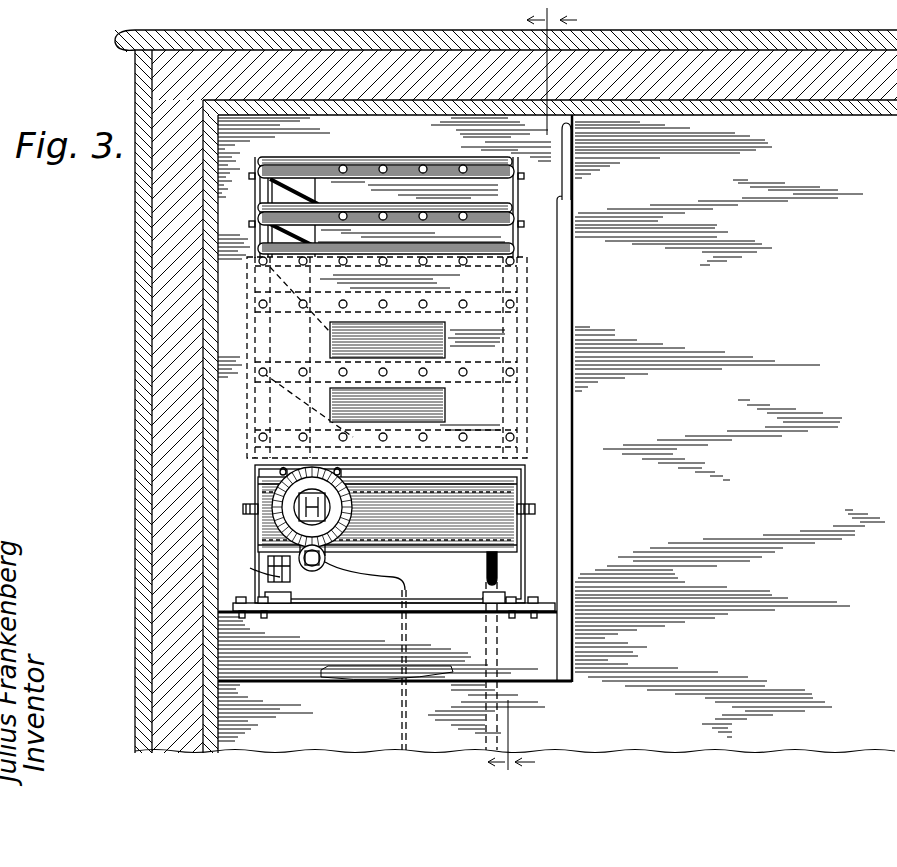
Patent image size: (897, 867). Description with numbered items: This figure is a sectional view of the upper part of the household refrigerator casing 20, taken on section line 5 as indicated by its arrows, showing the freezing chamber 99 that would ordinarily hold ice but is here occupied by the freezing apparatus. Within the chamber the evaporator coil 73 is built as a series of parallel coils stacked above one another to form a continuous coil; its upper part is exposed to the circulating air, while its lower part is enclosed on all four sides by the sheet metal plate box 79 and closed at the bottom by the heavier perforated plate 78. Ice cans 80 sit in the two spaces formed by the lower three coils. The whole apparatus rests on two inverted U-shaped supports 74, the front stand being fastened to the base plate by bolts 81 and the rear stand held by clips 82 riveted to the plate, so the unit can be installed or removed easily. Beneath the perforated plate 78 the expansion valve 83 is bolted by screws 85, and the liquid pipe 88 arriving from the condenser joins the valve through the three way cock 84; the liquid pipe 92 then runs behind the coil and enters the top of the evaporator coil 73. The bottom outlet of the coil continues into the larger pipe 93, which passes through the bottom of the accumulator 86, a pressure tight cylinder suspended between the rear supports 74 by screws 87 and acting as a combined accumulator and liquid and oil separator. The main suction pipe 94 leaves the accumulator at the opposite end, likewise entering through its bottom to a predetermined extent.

The section line 5- 5 is at (532, 393).
The household refrigerator casing 20 is at (135, 244).
The freezing chamber 99 is at (233, 193).
The evaporator coil 73 is at (408, 162).
The liquid pipe 92 is at (366, 158).
The perforated plate 78 is at (480, 456).
The sheet metal plate box 79 is at (527, 282).
The ice cans 80 is at (440, 345).
The inverted U-shaped supports 74 is at (525, 566).
The expansion valve 83 is at (352, 505).
The larger pipe 93 is at (288, 505).
The screws 85 is at (280, 474).
The screws 87 is at (243, 510).
The liquid pipe 88 is at (268, 563).
The three way cock 84 is at (355, 585).
The accumulator 86 is at (476, 559).
The main suction pipe 94 is at (487, 520).
The clips 82 is at (483, 596).
The bolts 81 is at (246, 618).